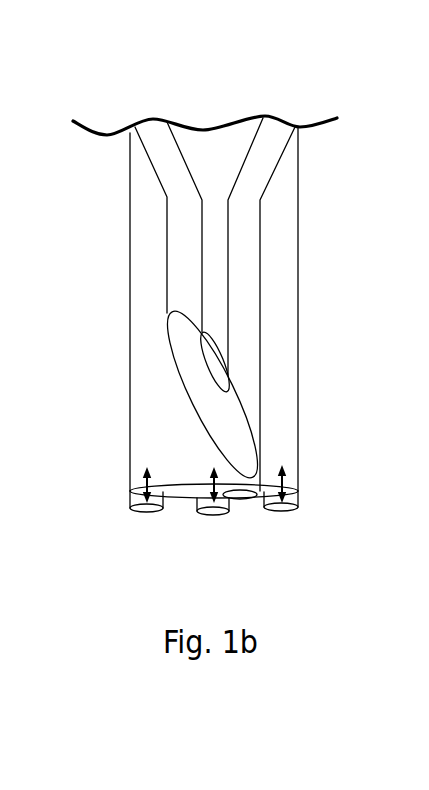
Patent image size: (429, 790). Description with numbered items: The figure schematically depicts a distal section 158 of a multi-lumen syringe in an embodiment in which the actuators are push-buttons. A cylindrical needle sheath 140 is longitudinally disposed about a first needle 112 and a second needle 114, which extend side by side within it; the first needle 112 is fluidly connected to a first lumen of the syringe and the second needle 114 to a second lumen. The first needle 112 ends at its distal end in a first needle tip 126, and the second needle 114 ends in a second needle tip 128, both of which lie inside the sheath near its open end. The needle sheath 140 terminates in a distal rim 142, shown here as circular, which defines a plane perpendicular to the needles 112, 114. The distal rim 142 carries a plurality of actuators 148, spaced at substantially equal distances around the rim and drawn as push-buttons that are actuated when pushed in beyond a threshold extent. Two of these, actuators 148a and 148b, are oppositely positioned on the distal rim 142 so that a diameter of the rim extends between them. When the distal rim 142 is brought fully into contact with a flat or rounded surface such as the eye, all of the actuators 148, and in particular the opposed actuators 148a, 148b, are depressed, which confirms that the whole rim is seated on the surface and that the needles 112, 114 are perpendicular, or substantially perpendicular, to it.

The distal section 158 is at (352, 180).
The needle sheath 140 is at (118, 330).
The second needle 114 is at (192, 248).
The first needle 112 is at (272, 267).
The second needle tip 128 is at (205, 358).
The first needle tip 126 is at (207, 427).
The distal rim 142 is at (180, 498).
The actuators 148 is at (239, 510).
The actuator 148a is at (287, 522).
The actuator 148b is at (140, 518).